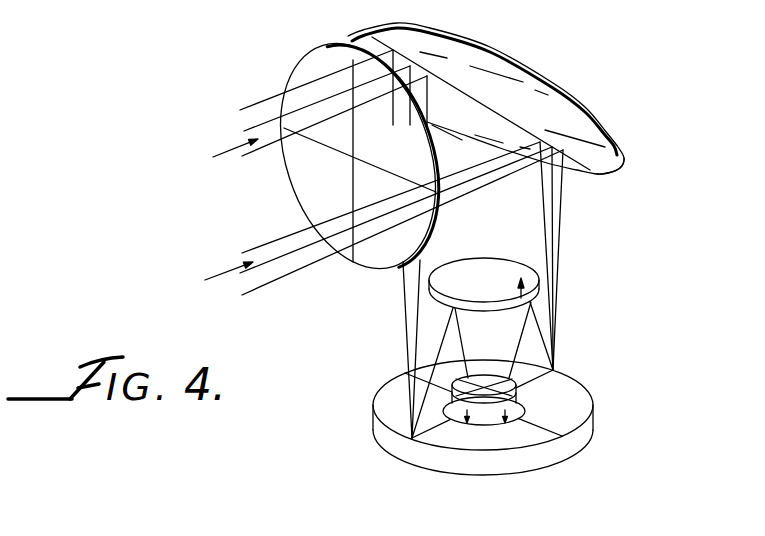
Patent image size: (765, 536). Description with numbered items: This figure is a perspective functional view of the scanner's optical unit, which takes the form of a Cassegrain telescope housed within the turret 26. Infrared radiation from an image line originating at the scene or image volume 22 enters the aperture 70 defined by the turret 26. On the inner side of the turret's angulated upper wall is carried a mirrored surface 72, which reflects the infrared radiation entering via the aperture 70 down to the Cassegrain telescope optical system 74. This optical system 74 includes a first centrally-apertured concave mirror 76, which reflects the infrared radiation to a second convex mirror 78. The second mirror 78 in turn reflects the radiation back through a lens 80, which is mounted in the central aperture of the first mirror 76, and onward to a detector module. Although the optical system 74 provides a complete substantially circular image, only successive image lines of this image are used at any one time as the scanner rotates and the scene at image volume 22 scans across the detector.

The scene or image volume 22 is at (209, 279).
The turret 26 is at (614, 80).
The aperture 70 is at (312, 61).
The mirrored surface 72 is at (607, 161).
The Cassegrain telescope optical system 74 is at (607, 312).
The first centrally-apertured concave mirror 76 is at (574, 403).
The second convex mirror 78 is at (499, 263).
The lens 80 is at (487, 374).